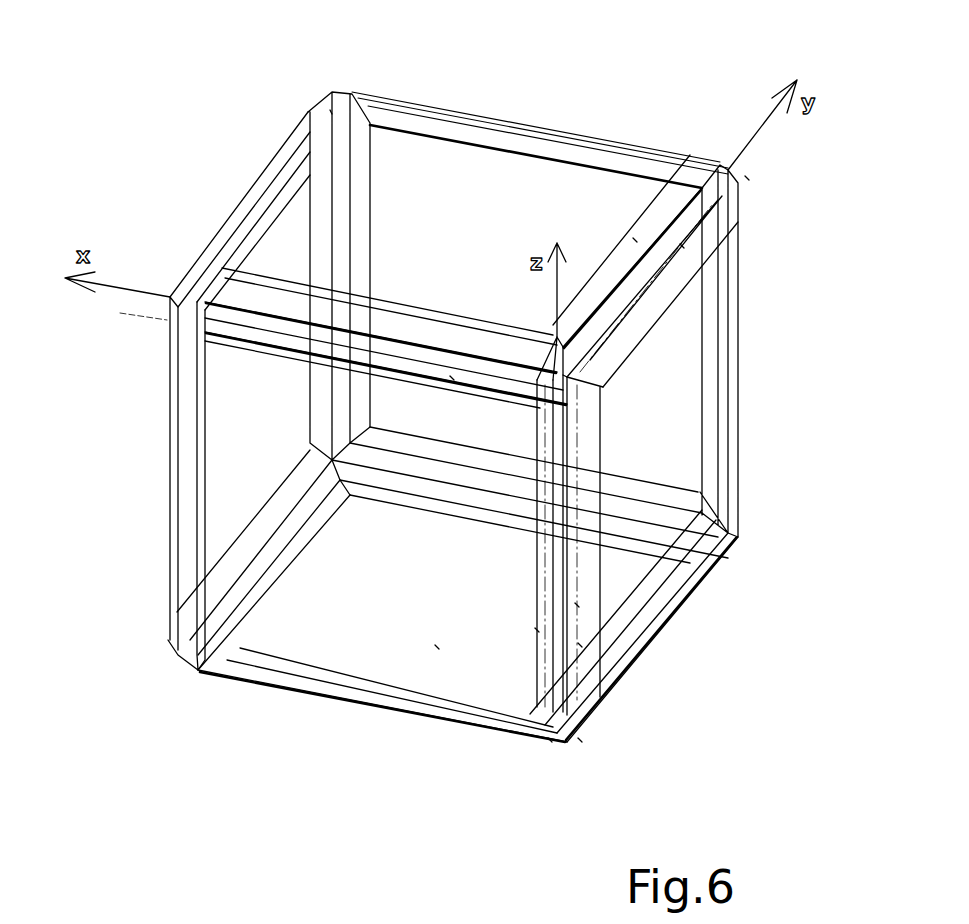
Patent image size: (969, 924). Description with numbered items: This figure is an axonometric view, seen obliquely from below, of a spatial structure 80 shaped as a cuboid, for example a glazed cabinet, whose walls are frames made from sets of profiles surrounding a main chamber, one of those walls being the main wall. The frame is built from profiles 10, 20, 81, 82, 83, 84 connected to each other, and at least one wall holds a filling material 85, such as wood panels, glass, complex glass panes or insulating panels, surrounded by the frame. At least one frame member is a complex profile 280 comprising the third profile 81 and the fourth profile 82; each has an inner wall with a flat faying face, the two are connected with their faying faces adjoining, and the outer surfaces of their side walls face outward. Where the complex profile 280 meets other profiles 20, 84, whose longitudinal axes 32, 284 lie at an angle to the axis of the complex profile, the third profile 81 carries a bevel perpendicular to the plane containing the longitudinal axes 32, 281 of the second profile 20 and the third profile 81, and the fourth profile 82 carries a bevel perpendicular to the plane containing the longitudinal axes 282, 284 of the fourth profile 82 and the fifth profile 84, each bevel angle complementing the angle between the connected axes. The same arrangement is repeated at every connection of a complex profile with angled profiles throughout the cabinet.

The first profile 10 is at (415, 330).
The second profile 20 is at (452, 378).
The longitudinal axis of the second profile 32 is at (137, 317).
The spatial structure 80 is at (672, 723).
The third profile 81 is at (537, 630).
The fourth profile 82 is at (580, 645).
The profile 83 is at (635, 240).
The fifth profile 84 is at (682, 247).
The filling material 85 is at (437, 645).
The complex profile 280 is at (575, 606).
The longitudinal axis of the third profile 281 is at (550, 740).
The longitudinal axis of the fourth profile 282 is at (580, 740).
The longitudinal axis of the fifth profile 284 is at (816, 204).